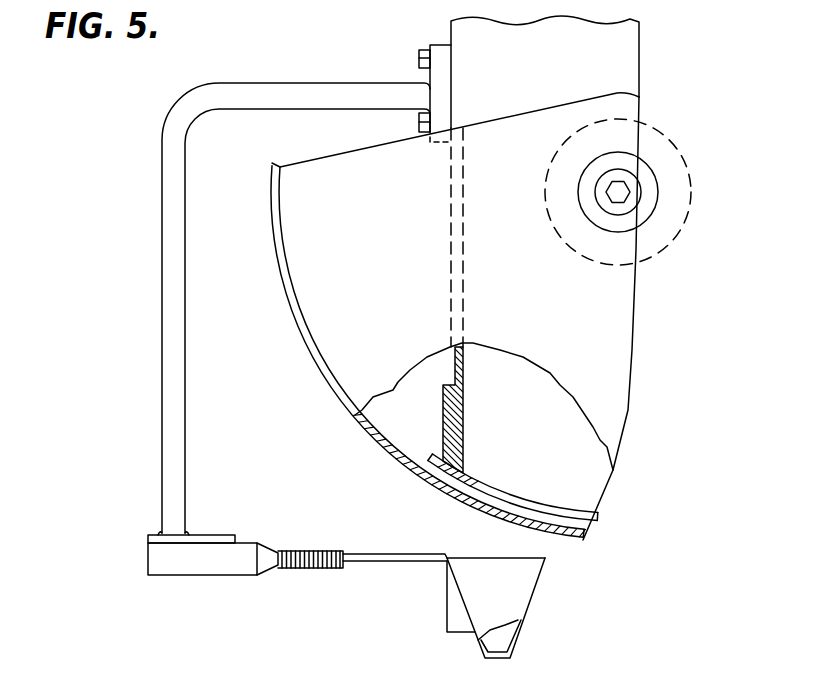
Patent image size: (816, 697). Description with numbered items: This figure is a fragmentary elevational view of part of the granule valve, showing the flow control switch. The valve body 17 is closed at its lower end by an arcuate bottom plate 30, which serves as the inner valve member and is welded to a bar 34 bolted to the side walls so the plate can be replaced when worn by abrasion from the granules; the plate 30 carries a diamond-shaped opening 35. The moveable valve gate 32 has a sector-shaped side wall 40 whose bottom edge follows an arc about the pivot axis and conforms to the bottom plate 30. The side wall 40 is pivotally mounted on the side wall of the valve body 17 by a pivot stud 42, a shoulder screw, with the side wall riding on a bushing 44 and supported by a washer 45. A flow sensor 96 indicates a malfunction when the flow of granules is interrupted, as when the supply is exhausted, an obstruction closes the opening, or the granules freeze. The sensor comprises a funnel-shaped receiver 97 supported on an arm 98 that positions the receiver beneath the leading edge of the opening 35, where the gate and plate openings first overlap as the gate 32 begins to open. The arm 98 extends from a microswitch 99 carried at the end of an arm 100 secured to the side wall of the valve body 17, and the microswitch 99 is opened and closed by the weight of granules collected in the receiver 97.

The valve body 17 is at (618, 71).
The valve gate 32 is at (645, 349).
The side wall 40 is at (532, 297).
The washers 45 is at (615, 142).
The bushings 44 is at (630, 163).
The pivot studs 42 is at (630, 200).
The bar 34 is at (445, 418).
The bottom plate 30 is at (455, 478).
The opening 35 is at (473, 487).
The arm 100 is at (168, 423).
The microswitch 99 is at (205, 567).
The arm 98 is at (357, 553).
The flow sensor 96 is at (391, 564).
The receiver 97 is at (510, 605).